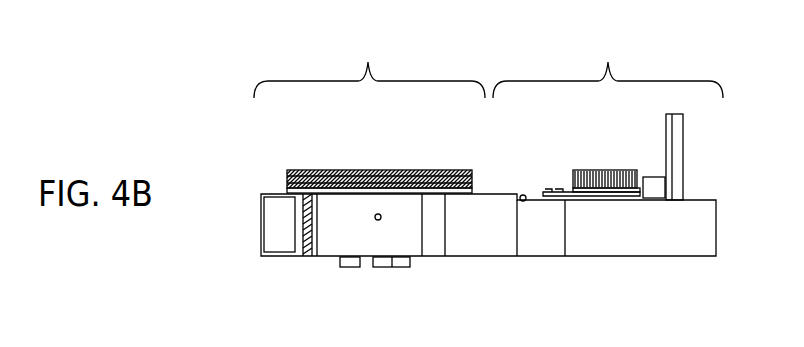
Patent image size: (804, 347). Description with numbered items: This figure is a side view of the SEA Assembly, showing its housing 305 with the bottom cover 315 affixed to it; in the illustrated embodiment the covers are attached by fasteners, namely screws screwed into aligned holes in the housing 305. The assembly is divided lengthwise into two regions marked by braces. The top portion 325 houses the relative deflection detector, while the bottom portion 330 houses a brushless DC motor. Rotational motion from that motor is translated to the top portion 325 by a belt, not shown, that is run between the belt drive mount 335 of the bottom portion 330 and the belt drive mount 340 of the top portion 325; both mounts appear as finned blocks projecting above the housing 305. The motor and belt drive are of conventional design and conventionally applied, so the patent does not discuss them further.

The housing 305 is at (268, 217).
The bottom cover 315 is at (272, 257).
The top portion 325 is at (368, 62).
The bottom portion 330 is at (608, 62).
The belt drive mount 335 is at (601, 170).
The belt drive mount 340 is at (375, 170).